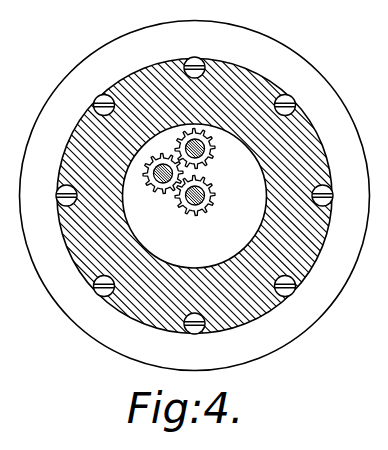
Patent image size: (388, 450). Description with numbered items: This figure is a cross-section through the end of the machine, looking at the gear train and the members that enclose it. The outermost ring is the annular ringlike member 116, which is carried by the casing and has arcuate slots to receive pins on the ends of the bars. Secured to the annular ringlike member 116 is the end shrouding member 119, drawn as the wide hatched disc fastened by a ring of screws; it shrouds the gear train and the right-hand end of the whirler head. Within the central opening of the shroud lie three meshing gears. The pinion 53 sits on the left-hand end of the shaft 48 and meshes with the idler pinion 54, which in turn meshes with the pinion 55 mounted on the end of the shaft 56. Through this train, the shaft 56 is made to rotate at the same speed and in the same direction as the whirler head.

The annular ringlike member 116 is at (90, 322).
The end shrouding member 119 is at (218, 71).
The shaft 48 is at (205, 150).
The pinion 53 is at (207, 160).
The idler pinion 54 is at (158, 182).
The pinion 55 is at (195, 207).
The shaft 56 is at (215, 204).